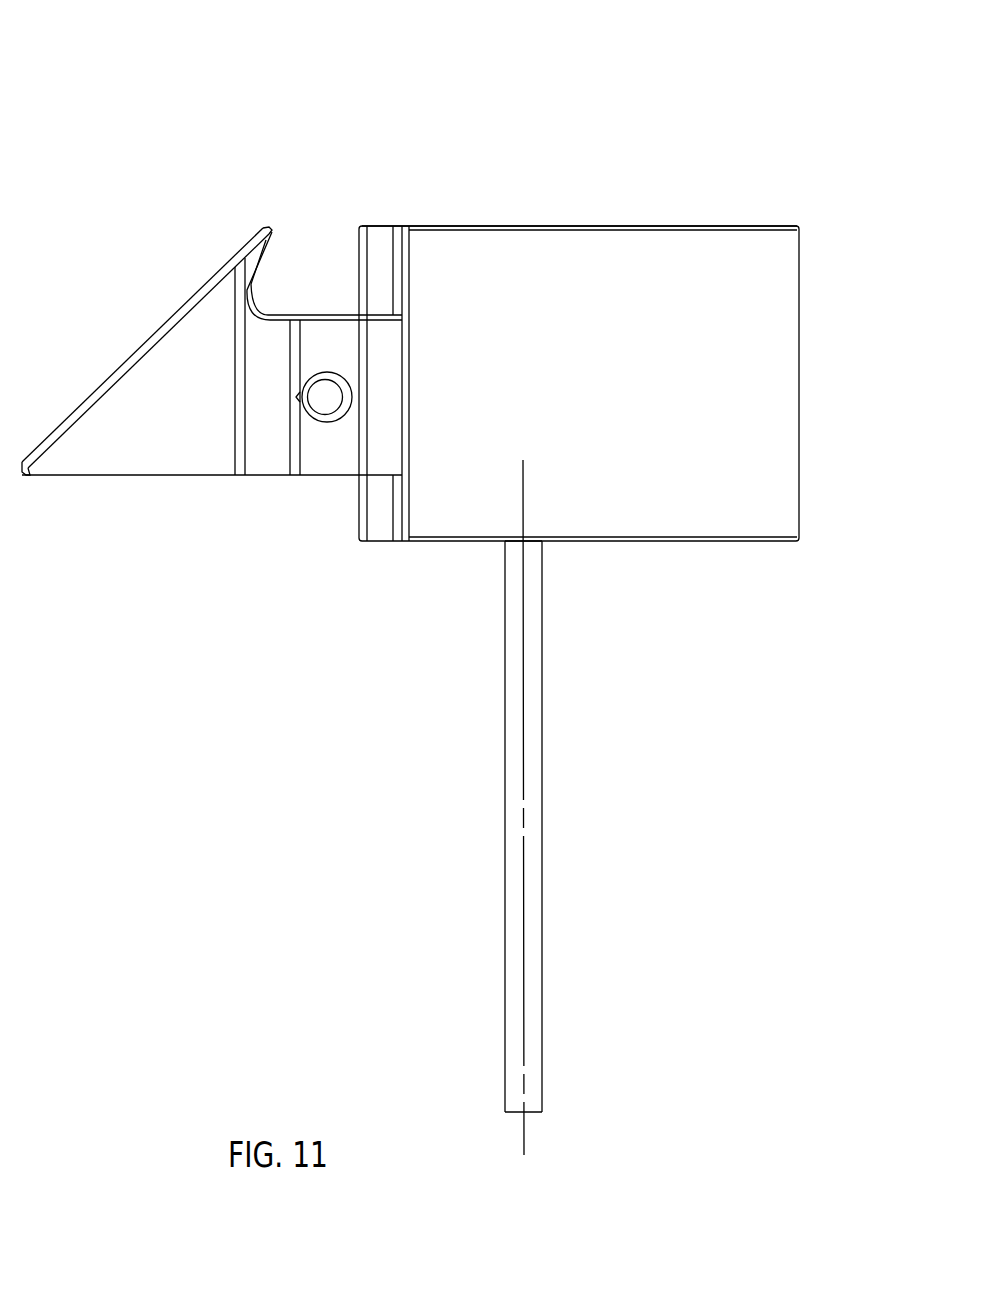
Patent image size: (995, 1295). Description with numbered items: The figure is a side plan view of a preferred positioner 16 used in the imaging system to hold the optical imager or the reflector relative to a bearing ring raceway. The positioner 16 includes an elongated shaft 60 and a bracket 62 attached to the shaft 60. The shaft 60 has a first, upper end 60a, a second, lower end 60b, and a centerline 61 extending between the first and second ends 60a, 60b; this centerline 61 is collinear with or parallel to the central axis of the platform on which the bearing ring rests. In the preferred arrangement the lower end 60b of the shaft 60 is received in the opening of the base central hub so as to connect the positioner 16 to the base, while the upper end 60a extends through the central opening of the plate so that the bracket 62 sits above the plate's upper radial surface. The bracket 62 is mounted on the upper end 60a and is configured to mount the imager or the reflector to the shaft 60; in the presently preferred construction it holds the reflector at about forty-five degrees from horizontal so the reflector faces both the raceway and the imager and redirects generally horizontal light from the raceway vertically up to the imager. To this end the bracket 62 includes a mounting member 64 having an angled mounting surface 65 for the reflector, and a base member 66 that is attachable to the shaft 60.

The positioner 16 is at (162, 52).
The shaft 60 is at (505, 800).
The first, upper end 60a is at (537, 507).
The second, lower end 60b is at (535, 1104).
The centerline 61 is at (525, 920).
The bracket 62 is at (476, 157).
The mounting member 64 is at (150, 488).
The angled mounting surface 65 is at (160, 317).
The base member 66 is at (652, 207).